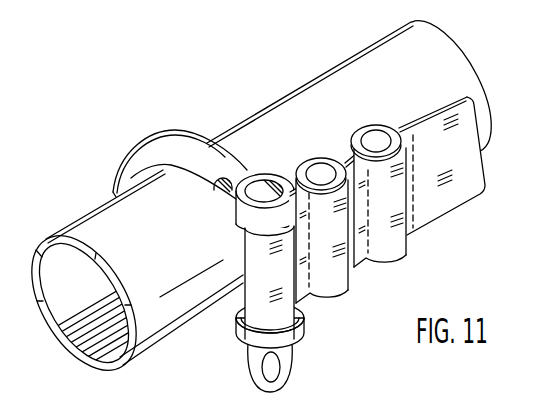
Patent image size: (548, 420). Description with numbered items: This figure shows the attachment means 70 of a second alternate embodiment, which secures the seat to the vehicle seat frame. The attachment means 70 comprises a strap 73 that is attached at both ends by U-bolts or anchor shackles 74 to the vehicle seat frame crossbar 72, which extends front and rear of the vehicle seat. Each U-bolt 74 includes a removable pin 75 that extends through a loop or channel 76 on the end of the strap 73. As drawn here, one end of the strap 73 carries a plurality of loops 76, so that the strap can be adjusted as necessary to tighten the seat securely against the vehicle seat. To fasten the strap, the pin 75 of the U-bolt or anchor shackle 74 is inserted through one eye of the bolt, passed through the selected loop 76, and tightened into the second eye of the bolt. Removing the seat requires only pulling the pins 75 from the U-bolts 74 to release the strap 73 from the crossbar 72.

The attachment means 70 is at (306, 217).
The crossbar 72 is at (456, 58).
The strap 73 is at (450, 163).
The U-bolt or anchor shackle 74 is at (150, 158).
The removable pin 75 is at (289, 378).
The loop 76 is at (355, 137).